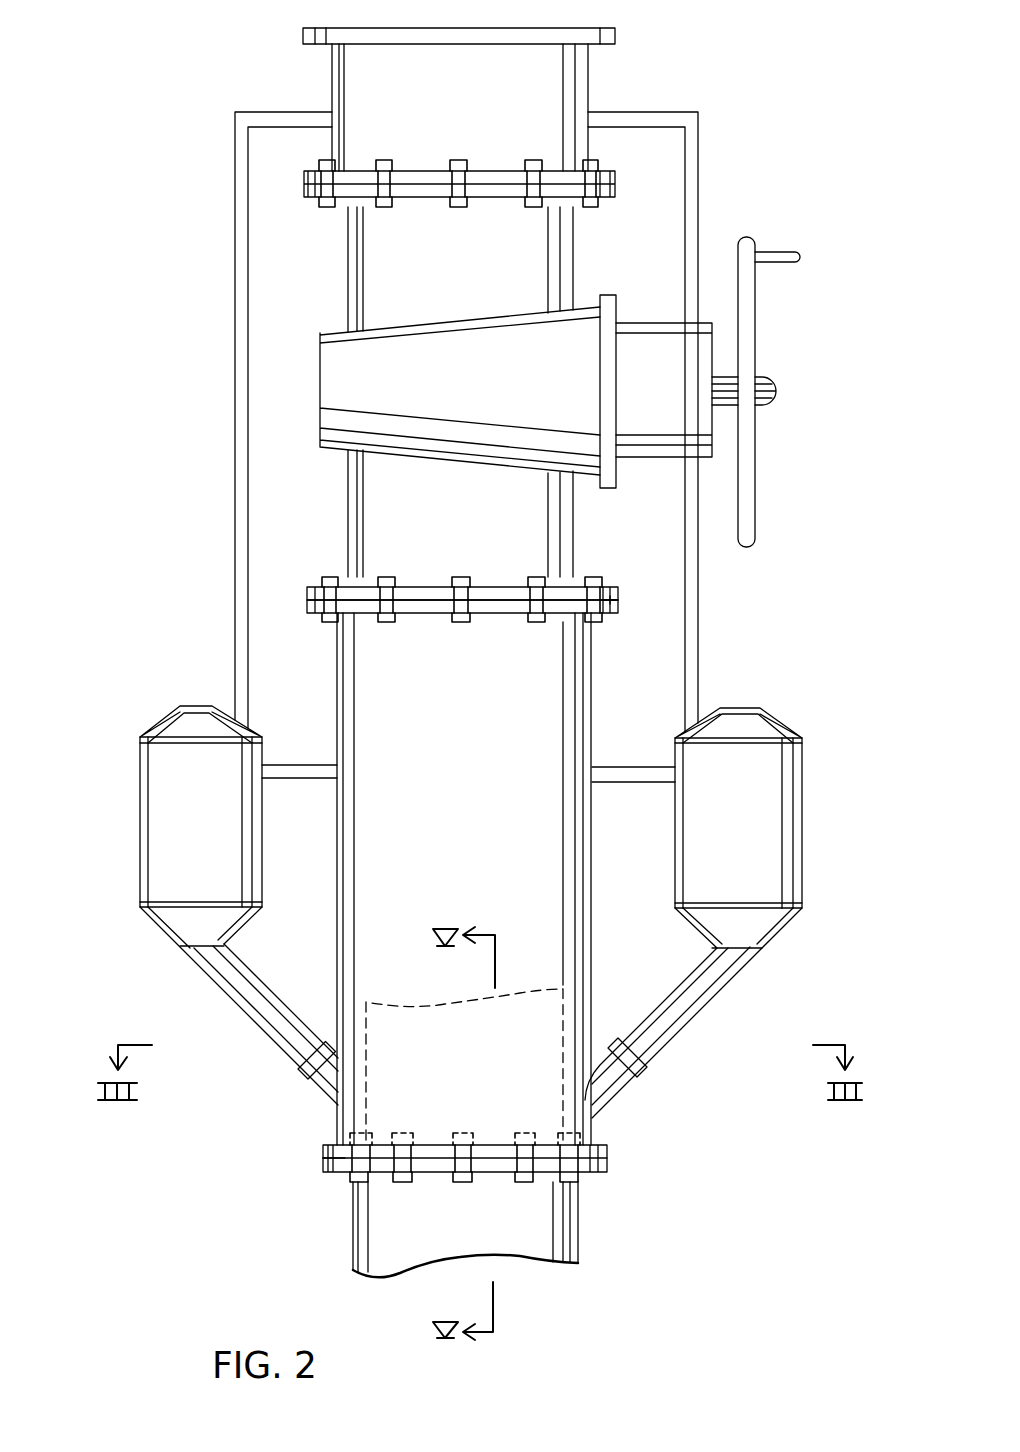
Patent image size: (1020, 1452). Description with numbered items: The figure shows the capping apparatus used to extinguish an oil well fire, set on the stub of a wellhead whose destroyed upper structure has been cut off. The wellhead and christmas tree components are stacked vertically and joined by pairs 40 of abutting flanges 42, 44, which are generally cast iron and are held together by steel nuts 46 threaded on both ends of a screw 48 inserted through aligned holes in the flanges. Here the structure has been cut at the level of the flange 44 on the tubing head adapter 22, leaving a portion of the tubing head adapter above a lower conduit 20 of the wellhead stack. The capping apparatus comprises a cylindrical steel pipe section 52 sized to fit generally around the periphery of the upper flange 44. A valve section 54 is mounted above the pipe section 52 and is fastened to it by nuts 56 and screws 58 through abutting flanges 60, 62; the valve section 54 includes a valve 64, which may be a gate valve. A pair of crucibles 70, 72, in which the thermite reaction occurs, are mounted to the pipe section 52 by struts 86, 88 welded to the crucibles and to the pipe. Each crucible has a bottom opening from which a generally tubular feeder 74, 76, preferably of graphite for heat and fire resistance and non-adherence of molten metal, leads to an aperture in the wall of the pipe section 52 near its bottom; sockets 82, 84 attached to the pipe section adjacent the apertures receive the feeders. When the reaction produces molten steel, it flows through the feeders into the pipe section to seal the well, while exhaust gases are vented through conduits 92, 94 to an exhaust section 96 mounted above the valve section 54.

The lower conduit 20 is at (560, 1245).
The tubing head adapter 22 is at (390, 1113).
The pair of abutting flanges 40 is at (497, 1164).
The flange 42 is at (610, 1172).
The flange 44 is at (613, 1147).
The nuts 46 is at (597, 1132).
The screw 48 is at (347, 1163).
The cylindrical steel pipe section 52 is at (560, 952).
The valve section 54 is at (556, 542).
The nuts 56 is at (594, 578).
The screws 58 is at (623, 608).
The flange 60 is at (312, 613).
The flange 62 is at (312, 587).
The valve 64 is at (358, 380).
The crucible 70 is at (163, 830).
The crucible 72 is at (767, 845).
The feeder 74 is at (240, 992).
The feeder 76 is at (708, 1002).
The socket 82 is at (322, 1080).
The socket 84 is at (605, 1075).
The strut 86 is at (312, 770).
The strut 88 is at (645, 772).
The conduit 92 is at (238, 282).
The conduit 94 is at (696, 162).
The exhaust section 96 is at (565, 78).